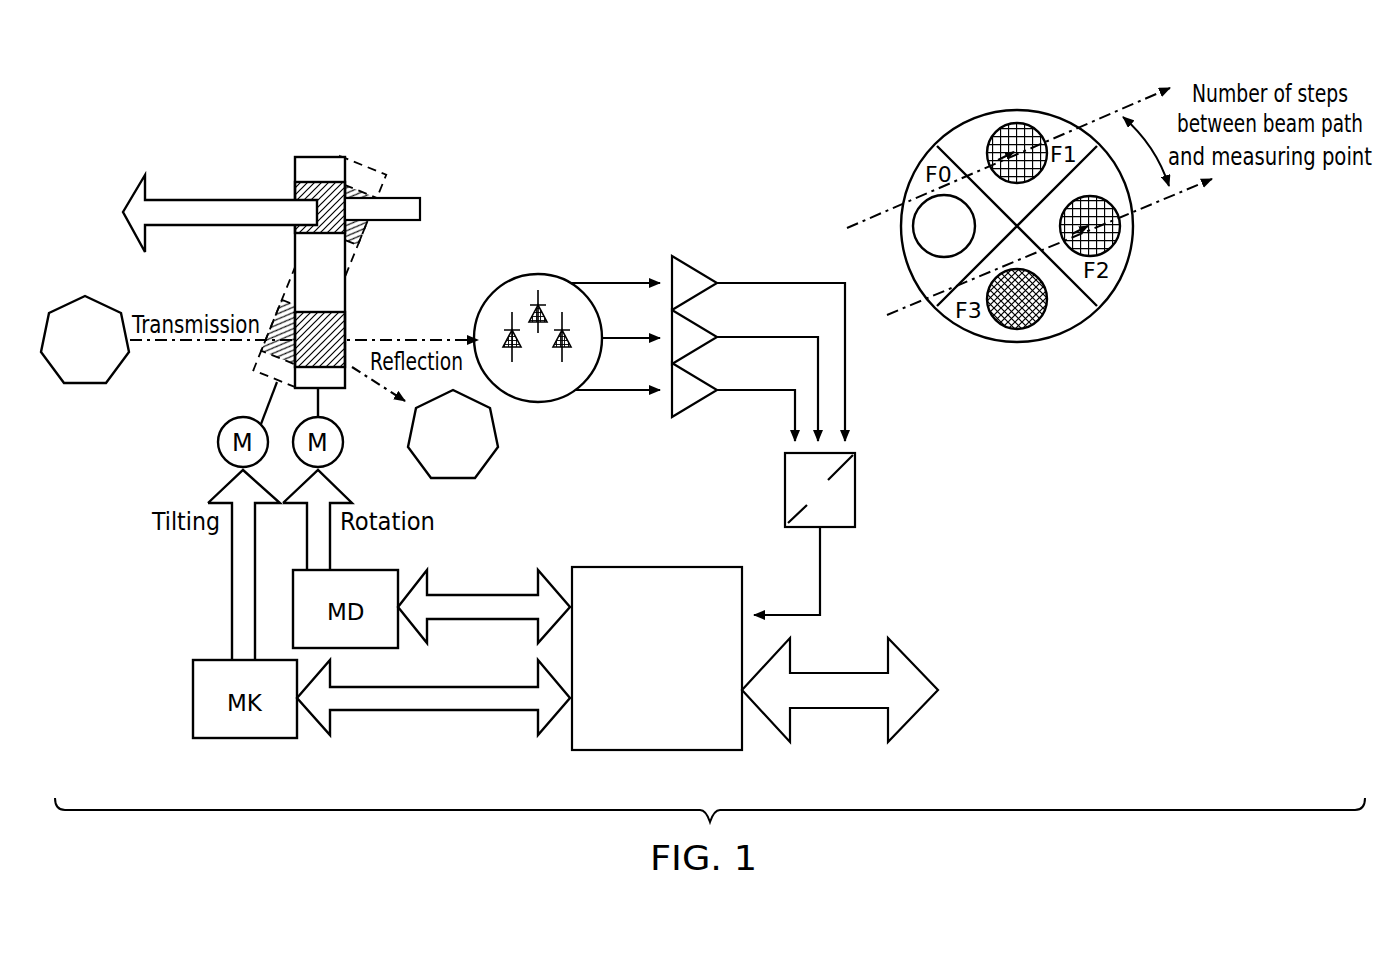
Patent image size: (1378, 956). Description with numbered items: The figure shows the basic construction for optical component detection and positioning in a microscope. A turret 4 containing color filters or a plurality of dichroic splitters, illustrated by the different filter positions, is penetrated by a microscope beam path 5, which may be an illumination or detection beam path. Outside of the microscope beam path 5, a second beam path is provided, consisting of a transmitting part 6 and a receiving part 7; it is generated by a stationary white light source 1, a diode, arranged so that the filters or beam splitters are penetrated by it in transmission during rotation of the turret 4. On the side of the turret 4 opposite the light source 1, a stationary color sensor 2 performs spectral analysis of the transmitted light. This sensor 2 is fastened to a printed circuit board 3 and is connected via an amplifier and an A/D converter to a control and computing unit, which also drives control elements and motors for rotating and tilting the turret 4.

The white light source 1 is at (269, 387).
The color sensor 2 is at (525, 276).
The printed circuit board 3 is at (710, 567).
The turret 4 is at (325, 157).
The microscope beam path 5 is at (207, 200).
The transmitting part of second beam path 6 is at (212, 340).
The receiving part of second beam path 7 is at (395, 340).